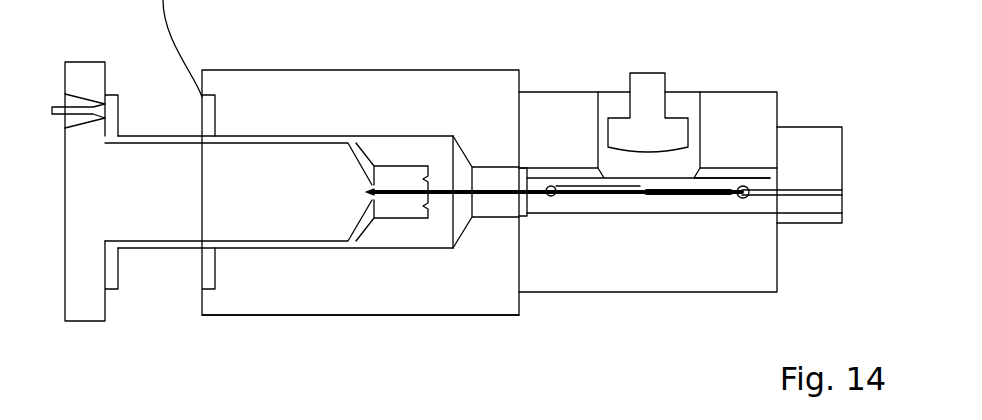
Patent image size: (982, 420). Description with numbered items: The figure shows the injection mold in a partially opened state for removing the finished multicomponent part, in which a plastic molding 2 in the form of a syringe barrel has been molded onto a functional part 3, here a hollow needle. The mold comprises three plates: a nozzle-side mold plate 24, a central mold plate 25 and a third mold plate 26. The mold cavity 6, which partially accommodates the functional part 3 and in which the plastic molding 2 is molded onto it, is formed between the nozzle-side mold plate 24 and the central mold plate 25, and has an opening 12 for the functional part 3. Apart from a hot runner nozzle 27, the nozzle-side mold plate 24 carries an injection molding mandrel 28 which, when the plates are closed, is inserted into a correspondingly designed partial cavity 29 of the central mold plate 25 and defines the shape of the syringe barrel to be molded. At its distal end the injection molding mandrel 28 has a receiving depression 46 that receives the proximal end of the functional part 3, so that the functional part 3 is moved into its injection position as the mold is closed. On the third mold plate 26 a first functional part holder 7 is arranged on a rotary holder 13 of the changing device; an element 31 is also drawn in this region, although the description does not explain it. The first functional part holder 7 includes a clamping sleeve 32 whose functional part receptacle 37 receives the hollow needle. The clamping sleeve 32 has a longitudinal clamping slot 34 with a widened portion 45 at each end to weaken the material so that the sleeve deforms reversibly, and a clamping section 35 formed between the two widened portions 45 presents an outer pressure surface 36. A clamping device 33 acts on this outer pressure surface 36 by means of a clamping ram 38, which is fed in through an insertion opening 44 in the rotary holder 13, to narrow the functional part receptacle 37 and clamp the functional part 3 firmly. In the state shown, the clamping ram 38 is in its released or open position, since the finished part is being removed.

The plastic molding 2 is at (283, 245).
The functional part 3 is at (538, 186).
The mold cavity 6 is at (330, 136).
The first functional part holder 7 is at (830, 148).
The opening 12 is at (519, 250).
The rotary holder 13 is at (700, 170).
The nozzle-side mold plate 24 is at (98, 265).
The central mold plate 25 is at (290, 100).
The third mold plate 26 is at (845, 78).
The hot runner nozzle 27 is at (78, 100).
The injection molding mandrel 28 is at (173, 178).
The partial cavity 29 is at (397, 157).
The ring 31 is at (522, 198).
The clamping sleeve 32 is at (607, 205).
The clamping device 33 is at (683, 74).
The clamping slot 34 is at (700, 217).
The clamping section 35 is at (638, 184).
The outer pressure surface 36 is at (765, 137).
The functional part receptacle 37 is at (578, 190).
The clamping ram 38 is at (642, 100).
The insertion opening 44 is at (696, 182).
The widened portion 45 is at (551, 185).
The receiving depression 46 is at (374, 182).